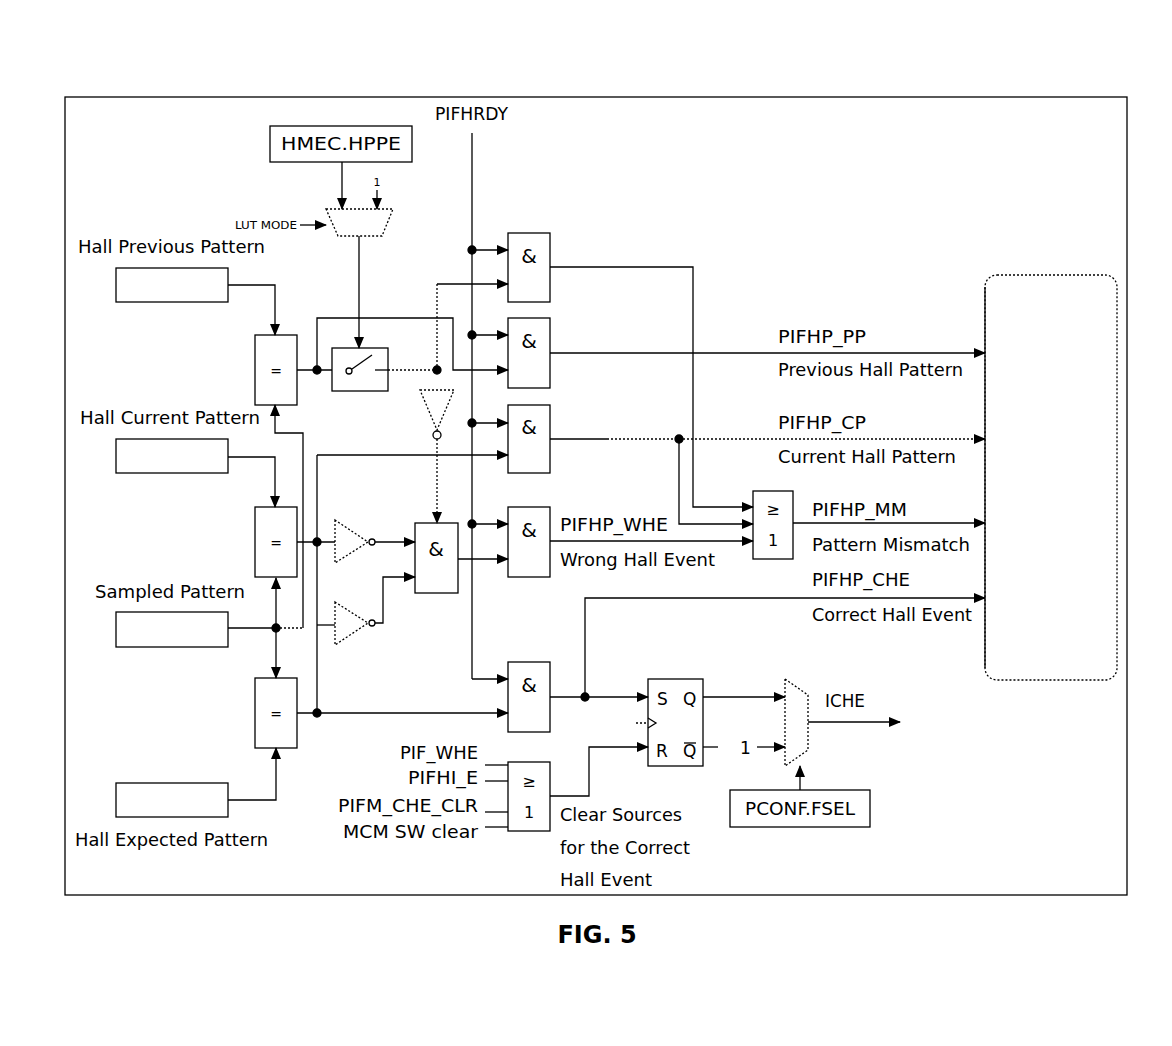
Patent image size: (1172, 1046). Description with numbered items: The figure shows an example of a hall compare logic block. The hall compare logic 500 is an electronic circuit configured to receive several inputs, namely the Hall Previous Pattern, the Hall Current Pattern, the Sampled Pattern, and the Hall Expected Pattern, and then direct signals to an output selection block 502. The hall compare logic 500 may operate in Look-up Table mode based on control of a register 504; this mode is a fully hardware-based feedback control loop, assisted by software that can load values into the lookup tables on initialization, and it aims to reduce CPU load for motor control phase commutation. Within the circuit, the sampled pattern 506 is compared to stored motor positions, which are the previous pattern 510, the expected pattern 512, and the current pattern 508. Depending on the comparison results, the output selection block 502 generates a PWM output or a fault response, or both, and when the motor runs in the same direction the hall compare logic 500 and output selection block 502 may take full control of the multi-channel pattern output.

The hall compare logic 500 is at (1093, 86).
The output selection block 502 is at (1004, 660).
The register 504 is at (370, 231).
The sampled pattern 506 is at (186, 648).
The current pattern 508 is at (152, 474).
The previous pattern 510 is at (186, 303).
The expected pattern 512 is at (180, 782).